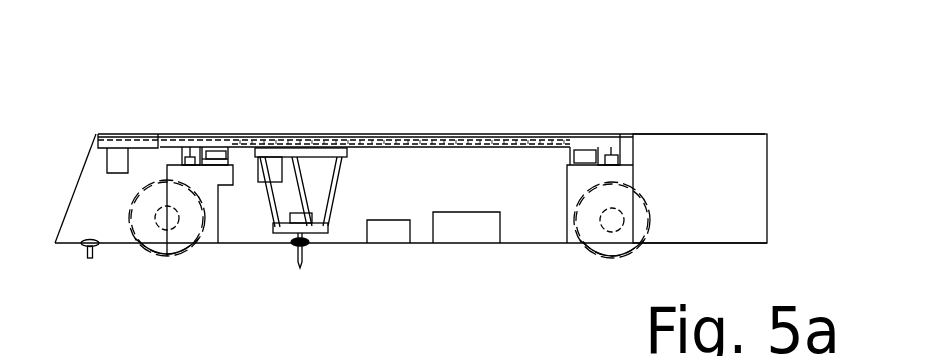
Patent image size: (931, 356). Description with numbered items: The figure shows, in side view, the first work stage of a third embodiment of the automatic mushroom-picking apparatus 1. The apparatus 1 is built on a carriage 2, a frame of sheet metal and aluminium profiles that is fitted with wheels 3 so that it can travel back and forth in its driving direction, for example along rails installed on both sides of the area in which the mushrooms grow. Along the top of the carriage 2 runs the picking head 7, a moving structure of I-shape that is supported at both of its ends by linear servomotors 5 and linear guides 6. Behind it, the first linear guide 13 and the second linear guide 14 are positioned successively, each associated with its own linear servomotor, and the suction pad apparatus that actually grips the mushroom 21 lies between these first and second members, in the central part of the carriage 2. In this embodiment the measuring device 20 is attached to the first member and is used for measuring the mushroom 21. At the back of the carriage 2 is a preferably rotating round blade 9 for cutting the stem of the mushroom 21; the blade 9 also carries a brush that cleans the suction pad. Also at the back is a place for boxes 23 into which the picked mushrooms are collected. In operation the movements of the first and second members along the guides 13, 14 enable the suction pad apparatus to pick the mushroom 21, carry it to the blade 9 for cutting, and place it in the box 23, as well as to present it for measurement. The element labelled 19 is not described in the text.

The apparatus 1 is at (492, 94).
The carriage 2 is at (712, 134).
The wheels 3 is at (170, 250).
The linear servomotors 5 is at (220, 157).
The linear guides 6 is at (188, 160).
The picking head 7 is at (206, 147).
The round blade 9 is at (395, 237).
The first linear guide 13 is at (254, 350).
The second linear guide 14 is at (452, 350).
The front bracket 19 is at (120, 163).
The measuring device 20 is at (258, 182).
The mushroom 21 is at (299, 255).
The boxes 23 is at (462, 233).